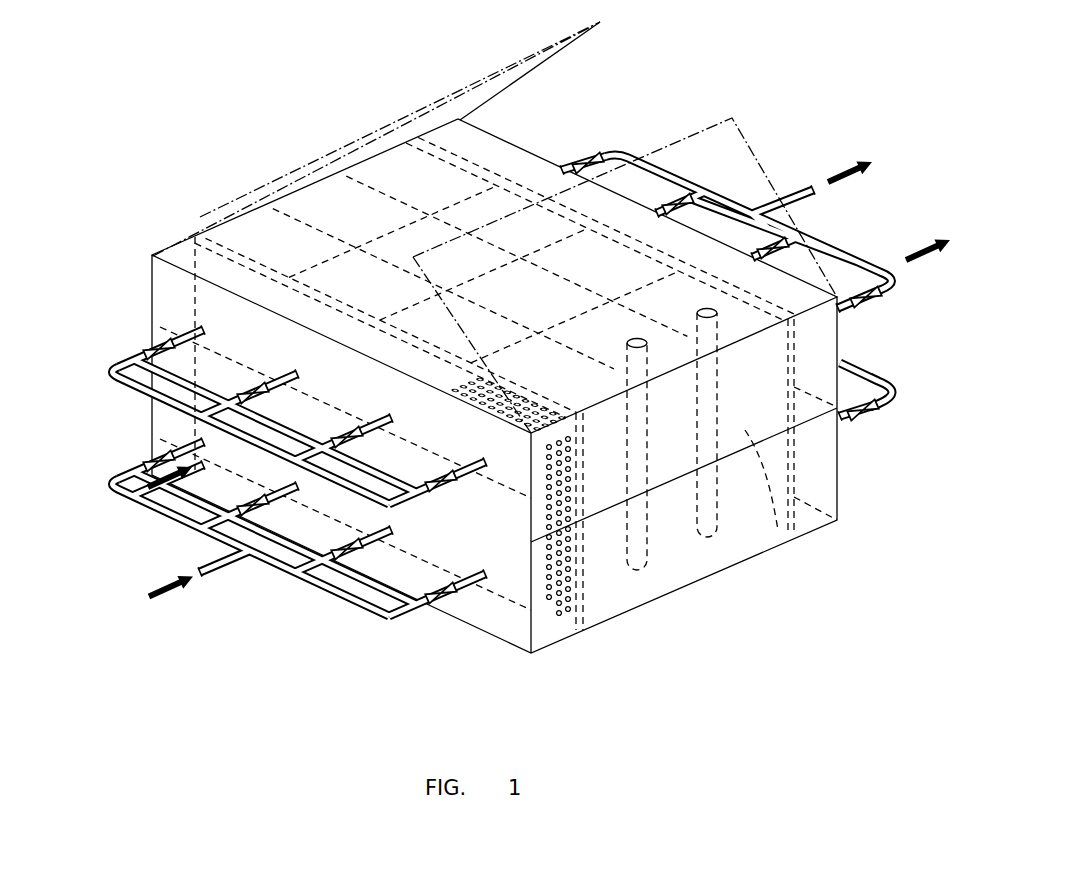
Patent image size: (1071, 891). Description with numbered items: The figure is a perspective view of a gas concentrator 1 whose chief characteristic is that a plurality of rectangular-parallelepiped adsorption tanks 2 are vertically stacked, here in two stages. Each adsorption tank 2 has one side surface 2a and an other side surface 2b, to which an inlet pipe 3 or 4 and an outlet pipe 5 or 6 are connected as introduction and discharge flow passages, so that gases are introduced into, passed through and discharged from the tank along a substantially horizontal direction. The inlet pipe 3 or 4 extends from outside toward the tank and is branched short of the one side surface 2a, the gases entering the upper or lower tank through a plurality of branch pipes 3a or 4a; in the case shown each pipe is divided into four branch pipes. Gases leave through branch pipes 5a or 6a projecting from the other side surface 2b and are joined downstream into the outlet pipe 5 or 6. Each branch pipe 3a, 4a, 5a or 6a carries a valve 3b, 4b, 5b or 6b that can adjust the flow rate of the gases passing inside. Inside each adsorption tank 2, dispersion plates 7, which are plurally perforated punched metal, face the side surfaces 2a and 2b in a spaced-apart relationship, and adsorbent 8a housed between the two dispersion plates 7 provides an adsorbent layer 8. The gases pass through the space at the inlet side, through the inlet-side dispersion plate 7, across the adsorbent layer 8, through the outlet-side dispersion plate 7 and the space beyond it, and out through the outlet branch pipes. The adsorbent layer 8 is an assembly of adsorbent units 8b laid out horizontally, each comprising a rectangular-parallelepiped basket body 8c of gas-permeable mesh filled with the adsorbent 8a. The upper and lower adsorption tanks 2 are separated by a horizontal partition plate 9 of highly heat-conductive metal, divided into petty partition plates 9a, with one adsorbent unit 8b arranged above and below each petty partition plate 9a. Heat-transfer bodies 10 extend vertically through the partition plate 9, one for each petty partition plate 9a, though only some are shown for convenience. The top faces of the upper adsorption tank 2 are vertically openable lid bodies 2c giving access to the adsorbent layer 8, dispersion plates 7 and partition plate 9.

The gas concentrator 1 is at (478, 333).
The adsorption tank 2 is at (478, 386).
The one side surface 2a is at (160, 298).
The other side surface 2b is at (840, 333).
The lid body 2c is at (170, 262).
The inlet pipe 3 is at (263, 402).
The branch pipe 3a is at (130, 357).
The valve 3b is at (150, 345).
The inlet pipe 4 is at (263, 571).
The branch pipe 4a is at (332, 576).
The valve 4b is at (370, 575).
The outlet pipe 5 is at (755, 206).
The branch pipe 5a is at (606, 156).
The valve 5b is at (588, 155).
The outlet pipe 6 is at (899, 420).
The branch pipe 6a is at (897, 395).
The valve 6b is at (877, 412).
The dispersion plate 7 is at (575, 628).
The adsorbent layer 8 is at (778, 530).
The adsorbent 8a is at (613, 597).
The adsorbent unit 8b is at (628, 600).
The basket body 8c is at (648, 597).
The partition plate 9 is at (737, 430).
The petty partition plate 9a is at (610, 507).
The heat-transfer body 10 is at (722, 363).